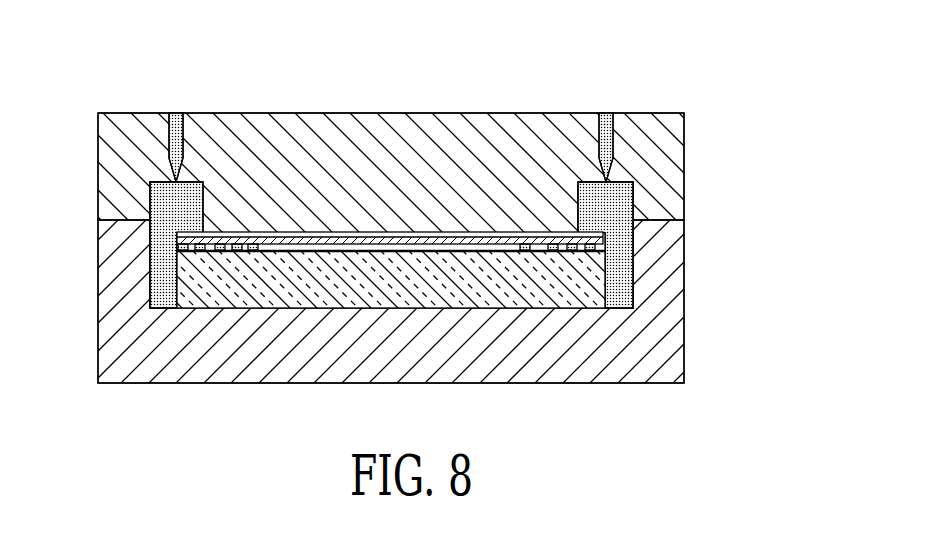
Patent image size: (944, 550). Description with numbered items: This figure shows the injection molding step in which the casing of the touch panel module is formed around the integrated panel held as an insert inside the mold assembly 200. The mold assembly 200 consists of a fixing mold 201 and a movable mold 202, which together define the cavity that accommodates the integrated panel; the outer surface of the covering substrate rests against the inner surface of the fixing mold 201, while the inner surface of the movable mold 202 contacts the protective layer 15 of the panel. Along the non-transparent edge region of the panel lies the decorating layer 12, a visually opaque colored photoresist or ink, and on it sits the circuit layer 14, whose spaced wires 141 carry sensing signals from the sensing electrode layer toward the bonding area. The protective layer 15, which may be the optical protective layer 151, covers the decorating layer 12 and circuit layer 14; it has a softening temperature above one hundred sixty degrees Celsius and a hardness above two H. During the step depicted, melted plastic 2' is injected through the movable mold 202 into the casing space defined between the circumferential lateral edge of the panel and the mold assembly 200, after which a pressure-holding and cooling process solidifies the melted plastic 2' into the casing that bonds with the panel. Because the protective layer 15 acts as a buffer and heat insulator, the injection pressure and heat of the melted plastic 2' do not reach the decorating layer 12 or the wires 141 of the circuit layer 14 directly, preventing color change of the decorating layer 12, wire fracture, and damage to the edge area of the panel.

The mold assembly 200 is at (773, 140).
The fixing mold 201 is at (663, 313).
The movable mold 202 is at (652, 150).
The melted plastic 2' is at (125, 245).
The decorating layer 12 is at (177, 275).
The circuit layer 14 is at (247, 64).
The wires 141 is at (253, 246).
The protective layer 15 is at (393, 54).
The optical protective layer 151 is at (362, 232).